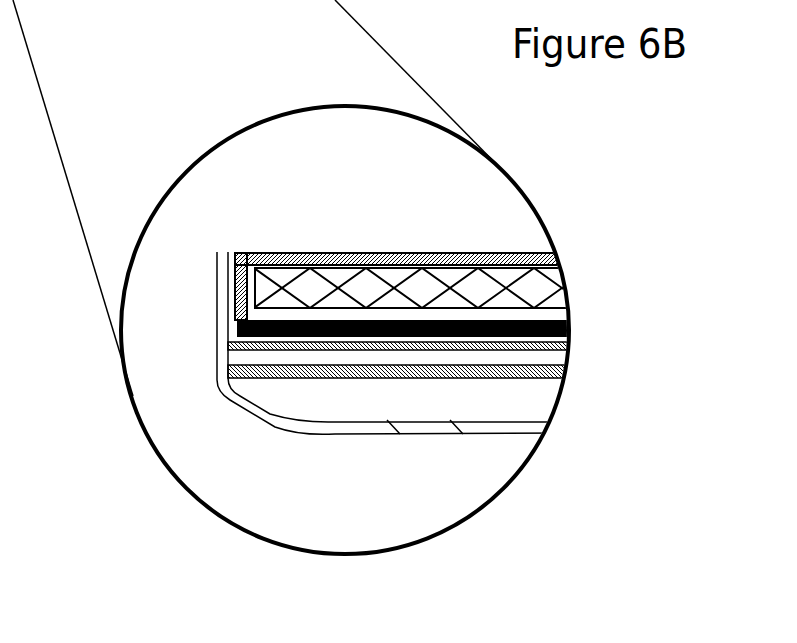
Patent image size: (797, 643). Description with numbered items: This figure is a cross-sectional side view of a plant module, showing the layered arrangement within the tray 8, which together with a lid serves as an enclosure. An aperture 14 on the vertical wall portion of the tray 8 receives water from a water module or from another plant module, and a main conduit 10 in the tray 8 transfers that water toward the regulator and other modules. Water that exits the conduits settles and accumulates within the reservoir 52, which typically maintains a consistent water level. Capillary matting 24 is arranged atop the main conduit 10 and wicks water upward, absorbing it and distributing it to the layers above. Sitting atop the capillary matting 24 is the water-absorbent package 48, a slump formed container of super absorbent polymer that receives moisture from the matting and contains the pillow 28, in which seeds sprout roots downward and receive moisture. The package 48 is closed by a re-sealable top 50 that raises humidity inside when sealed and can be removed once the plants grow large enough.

The tray 8 is at (505, 438).
The main conduit 10 is at (270, 378).
The aperture 14 is at (222, 352).
The capillary matting 24 is at (238, 323).
The pillow 28 is at (547, 292).
The water-absorbent package 48 is at (243, 280).
The re-sealable top 50 is at (292, 253).
The reservoir 52 is at (367, 412).